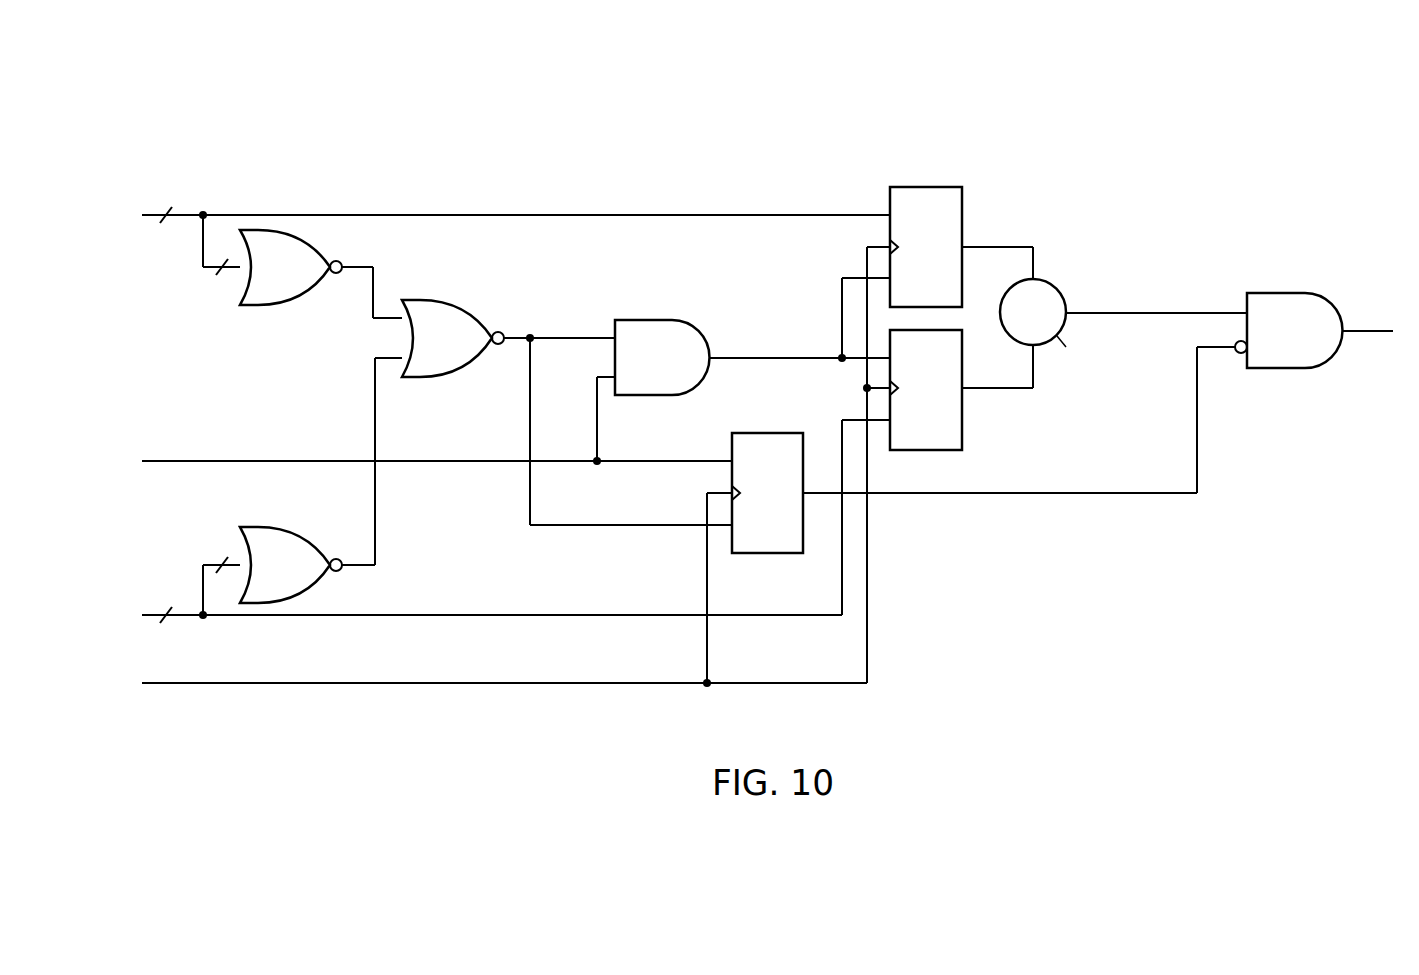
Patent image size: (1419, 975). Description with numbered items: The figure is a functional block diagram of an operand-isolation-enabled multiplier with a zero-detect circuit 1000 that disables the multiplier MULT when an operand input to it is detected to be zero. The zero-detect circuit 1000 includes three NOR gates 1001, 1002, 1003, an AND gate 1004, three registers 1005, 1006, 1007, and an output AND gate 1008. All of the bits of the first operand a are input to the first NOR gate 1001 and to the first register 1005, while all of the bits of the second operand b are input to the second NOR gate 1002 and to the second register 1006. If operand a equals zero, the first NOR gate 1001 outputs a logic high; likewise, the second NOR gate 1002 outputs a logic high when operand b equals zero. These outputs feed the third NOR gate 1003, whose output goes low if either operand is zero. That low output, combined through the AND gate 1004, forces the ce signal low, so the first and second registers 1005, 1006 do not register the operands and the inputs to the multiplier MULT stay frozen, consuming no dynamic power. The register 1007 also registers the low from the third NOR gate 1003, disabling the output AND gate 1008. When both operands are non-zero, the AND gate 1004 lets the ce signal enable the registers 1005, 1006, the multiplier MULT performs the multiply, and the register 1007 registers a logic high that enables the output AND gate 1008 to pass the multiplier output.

The zero-detect circuit 1000 is at (382, 116).
The first NOR gate 1001 is at (268, 305).
The second NOR gate 1002 is at (313, 540).
The third NOR gate 1003 is at (458, 377).
The AND gate 1004 is at (673, 395).
The first register 1005 is at (938, 187).
The second register 1006 is at (962, 435).
The register 1007 is at (762, 553).
The output AND gate 1008 is at (1308, 368).